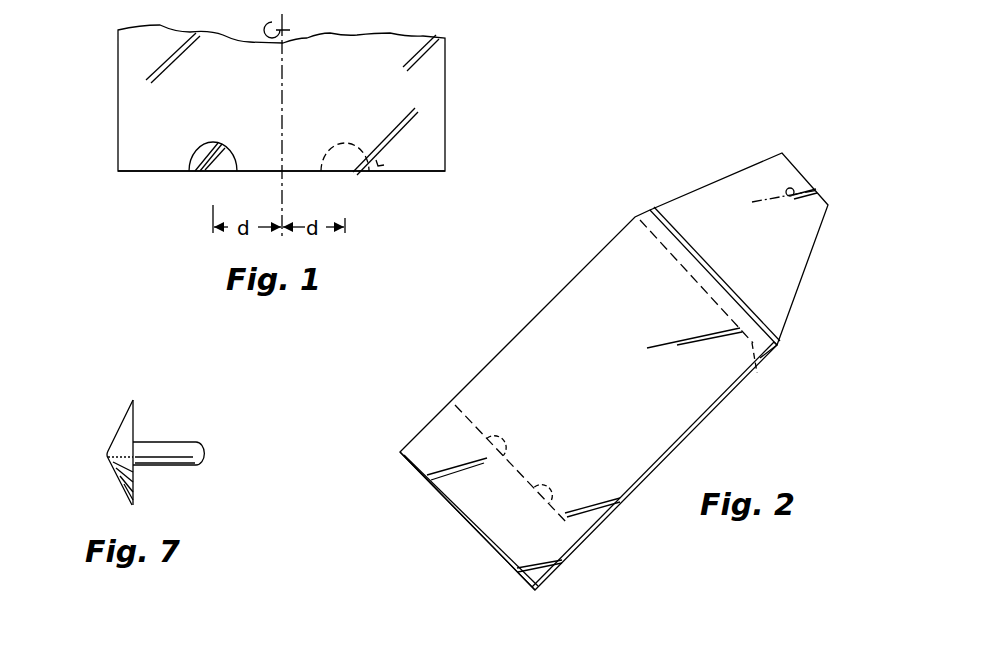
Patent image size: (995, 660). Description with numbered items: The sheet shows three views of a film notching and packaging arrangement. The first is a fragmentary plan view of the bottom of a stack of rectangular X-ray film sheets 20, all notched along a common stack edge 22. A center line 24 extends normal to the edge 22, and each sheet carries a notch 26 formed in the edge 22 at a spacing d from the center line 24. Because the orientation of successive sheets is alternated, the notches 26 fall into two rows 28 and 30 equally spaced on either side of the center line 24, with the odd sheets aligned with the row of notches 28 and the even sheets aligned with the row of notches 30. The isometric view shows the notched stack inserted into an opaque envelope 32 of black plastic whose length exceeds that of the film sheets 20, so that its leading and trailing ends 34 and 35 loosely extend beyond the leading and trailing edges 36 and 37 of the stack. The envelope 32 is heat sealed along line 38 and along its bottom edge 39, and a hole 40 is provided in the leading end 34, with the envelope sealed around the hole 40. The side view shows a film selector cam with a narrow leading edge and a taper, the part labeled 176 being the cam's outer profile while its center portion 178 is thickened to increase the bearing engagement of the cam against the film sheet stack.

In FIG. 1, the film sheets 20 is at (448, 77).
In FIG. 1, the stack edge 22 is at (145, 172).
In FIG. 1, the center line 24 is at (283, 84).
In FIG. 1, the notch 26 is at (208, 138).
In FIG. 1, the row of notches 28 is at (207, 176).
In FIG. 1, the row of notches 30 is at (359, 184).
In FIG. 2, the opaque envelope 32 is at (556, 282).
In FIG. 2, the leading end 34 is at (723, 163).
In FIG. 2, the trailing end 35 is at (412, 418).
In FIG. 2, the leading edge 36 is at (758, 360).
In FIG. 2, the trailing edge 37 is at (593, 530).
In FIG. 2, the seal line 38 is at (762, 323).
In FIG. 2, the bottom edge 39 is at (461, 510).
In FIG. 2, the hole 40 is at (792, 188).
In FIG. 7, the rivet 176 is at (133, 400).
In FIG. 7, the center portion 178 is at (106, 456).